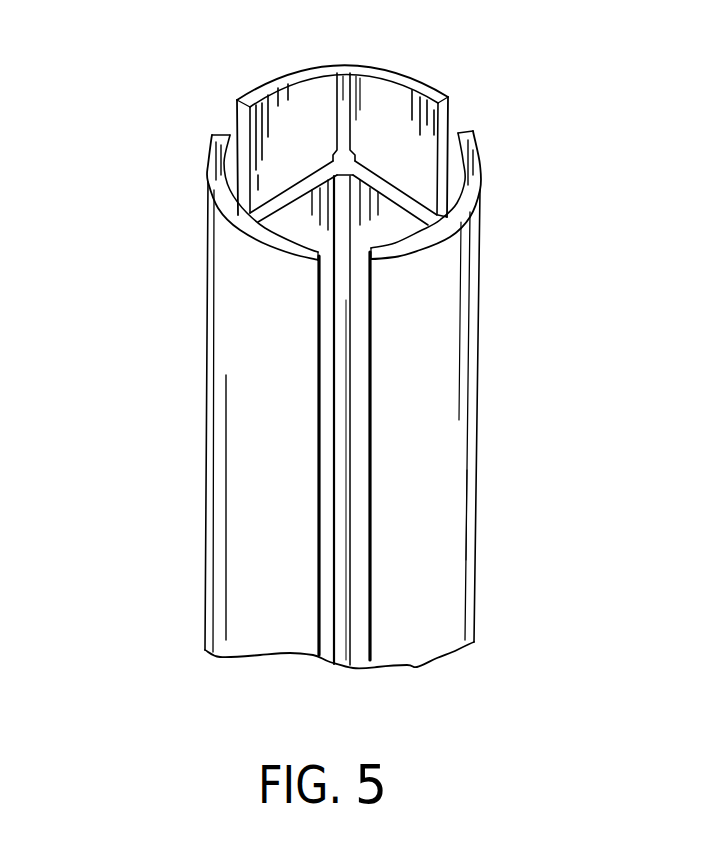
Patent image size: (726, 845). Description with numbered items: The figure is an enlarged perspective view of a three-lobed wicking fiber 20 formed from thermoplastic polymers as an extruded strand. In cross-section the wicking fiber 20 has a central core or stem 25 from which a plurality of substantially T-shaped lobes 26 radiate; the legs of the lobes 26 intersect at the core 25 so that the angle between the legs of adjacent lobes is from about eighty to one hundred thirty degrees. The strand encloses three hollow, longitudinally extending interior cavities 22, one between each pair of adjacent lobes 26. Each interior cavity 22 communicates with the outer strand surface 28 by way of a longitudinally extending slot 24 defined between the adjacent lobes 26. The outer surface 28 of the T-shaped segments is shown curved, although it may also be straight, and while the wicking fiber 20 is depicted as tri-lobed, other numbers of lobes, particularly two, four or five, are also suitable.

The wicking fiber 20 is at (168, 452).
The interior cavity 22 is at (305, 100).
The slot 24 is at (222, 123).
The central core 25 is at (344, 394).
The T-shaped lobe 26 is at (438, 254).
The outer strand surface 28 is at (243, 505).